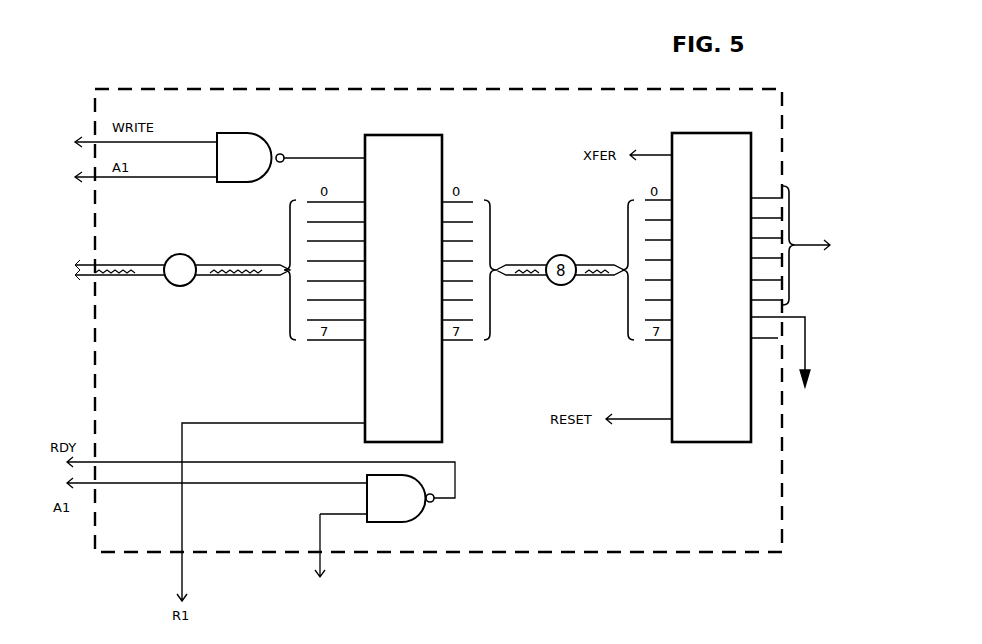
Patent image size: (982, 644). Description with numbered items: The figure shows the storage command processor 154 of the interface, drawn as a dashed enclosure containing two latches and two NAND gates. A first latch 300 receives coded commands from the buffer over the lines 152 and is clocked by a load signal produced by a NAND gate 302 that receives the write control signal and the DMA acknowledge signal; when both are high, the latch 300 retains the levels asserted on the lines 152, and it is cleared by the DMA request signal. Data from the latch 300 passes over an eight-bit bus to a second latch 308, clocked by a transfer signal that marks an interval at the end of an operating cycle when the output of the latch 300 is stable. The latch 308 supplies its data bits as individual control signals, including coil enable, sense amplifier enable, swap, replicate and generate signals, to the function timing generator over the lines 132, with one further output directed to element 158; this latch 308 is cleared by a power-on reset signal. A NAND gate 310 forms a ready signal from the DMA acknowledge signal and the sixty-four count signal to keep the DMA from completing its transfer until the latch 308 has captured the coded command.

The storage command processor 154 is at (432, 88).
The NAND gate 302 is at (263, 133).
The lines 152 is at (262, 276).
The first latch 300 is at (365, 376).
The second latch 308 is at (672, 368).
The lines 132 is at (806, 245).
The destination circuit 158 is at (785, 375).
The NAND gate 310 is at (420, 516).